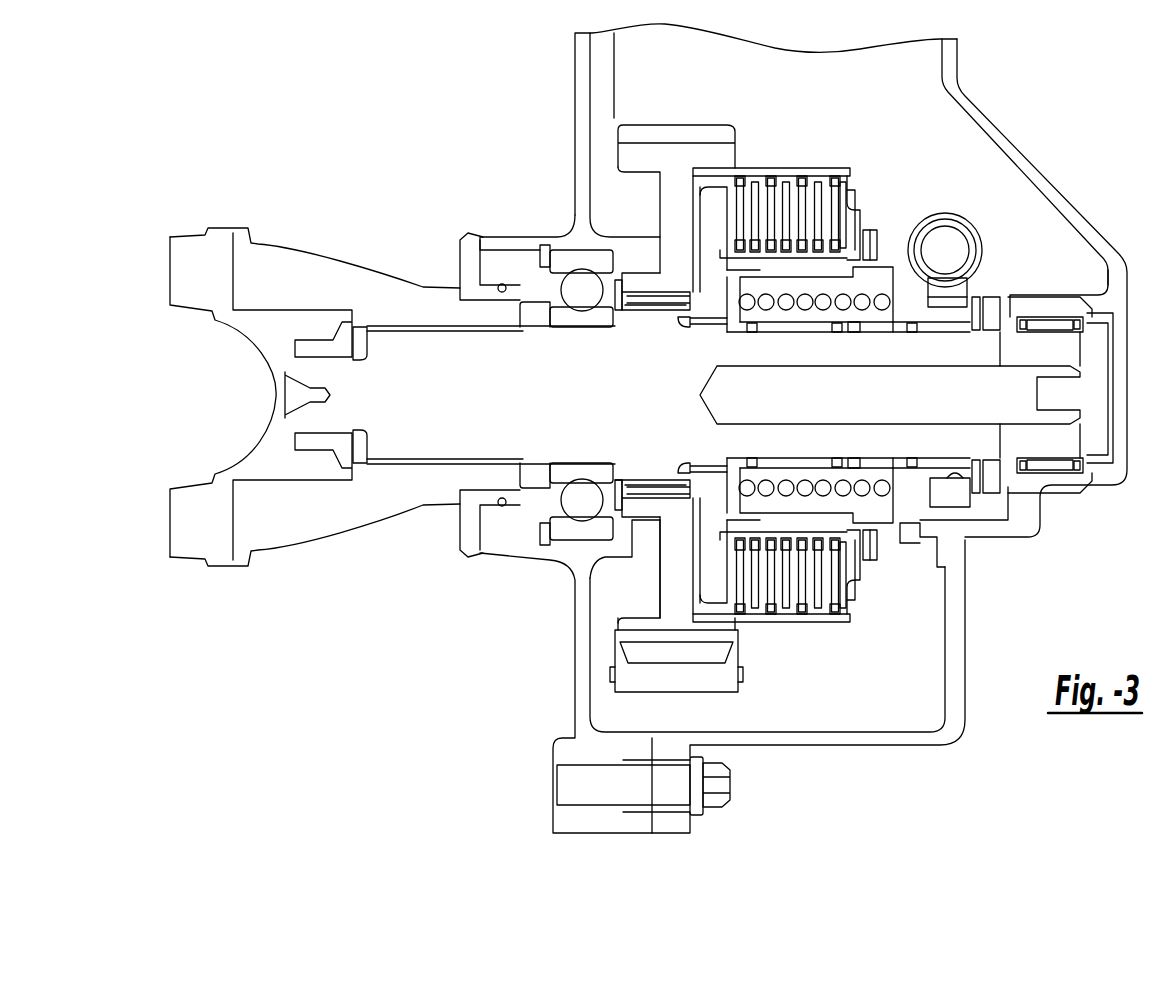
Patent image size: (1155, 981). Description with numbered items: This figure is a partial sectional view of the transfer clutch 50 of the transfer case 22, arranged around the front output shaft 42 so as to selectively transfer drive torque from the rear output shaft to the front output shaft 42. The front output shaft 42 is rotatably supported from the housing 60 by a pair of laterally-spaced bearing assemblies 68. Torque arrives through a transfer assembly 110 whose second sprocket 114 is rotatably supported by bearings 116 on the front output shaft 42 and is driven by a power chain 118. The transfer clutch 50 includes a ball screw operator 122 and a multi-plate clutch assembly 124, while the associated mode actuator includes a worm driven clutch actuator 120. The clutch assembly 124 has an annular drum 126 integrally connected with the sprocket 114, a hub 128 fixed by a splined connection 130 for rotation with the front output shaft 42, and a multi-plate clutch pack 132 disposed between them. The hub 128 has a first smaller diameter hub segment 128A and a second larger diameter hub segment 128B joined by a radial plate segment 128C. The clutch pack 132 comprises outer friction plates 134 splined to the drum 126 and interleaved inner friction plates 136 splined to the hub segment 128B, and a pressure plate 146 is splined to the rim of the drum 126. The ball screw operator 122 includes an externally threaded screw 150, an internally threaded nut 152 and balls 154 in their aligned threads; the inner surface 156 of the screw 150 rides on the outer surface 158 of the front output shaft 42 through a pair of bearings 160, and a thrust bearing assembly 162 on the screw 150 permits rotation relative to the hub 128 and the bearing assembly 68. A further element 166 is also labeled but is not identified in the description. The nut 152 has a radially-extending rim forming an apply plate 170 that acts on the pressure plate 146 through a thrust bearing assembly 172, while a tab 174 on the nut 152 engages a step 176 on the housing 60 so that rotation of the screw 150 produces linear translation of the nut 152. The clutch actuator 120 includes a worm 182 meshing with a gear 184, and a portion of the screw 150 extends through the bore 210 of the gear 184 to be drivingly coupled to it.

The transfer case 22 is at (392, 171).
The front output shaft 42 is at (405, 365).
The transfer clutch 50 is at (955, 152).
The housing 60 is at (580, 125).
The bearing assemblies 68 is at (565, 533).
The transfer assembly 110 is at (636, 73).
The second sprocket 114 is at (670, 557).
The bearings 116 is at (643, 490).
The power chain 118 is at (640, 683).
The worm driven clutch actuator 120 is at (1040, 222).
The ball screw operator 122 is at (868, 318).
The multi-plate clutch assembly 124 is at (834, 158).
The annular drum 126 is at (742, 167).
The hub 128 is at (690, 310).
The first smaller diameter hub segment 128A is at (640, 312).
The second larger diameter hub segment 128B is at (745, 268).
The radial plate segment 128C is at (707, 227).
The splined connection 130 is at (707, 323).
The multi-plate clutch pack 132 is at (759, 198).
The outer friction plates 134 is at (801, 192).
The inner friction plates 136 is at (828, 200).
The pressure plate 146 is at (852, 217).
The externally threaded screw 150 is at (782, 313).
The internally threaded nut 152 is at (882, 500).
The balls 154 is at (823, 310).
The inner surface 156 is at (930, 325).
The outer surface 158 is at (757, 320).
The bearings 160 is at (790, 328).
The thrust bearing assembly 162 is at (993, 333).
The ball ramp 166 is at (853, 328).
The apply plate 170 is at (908, 225).
The thrust bearing assembly 172 is at (885, 250).
The tab 174 is at (900, 540).
The step 176 is at (937, 532).
The worm 182 is at (960, 226).
The gear 184 is at (958, 298).
The bore 210 is at (977, 492).